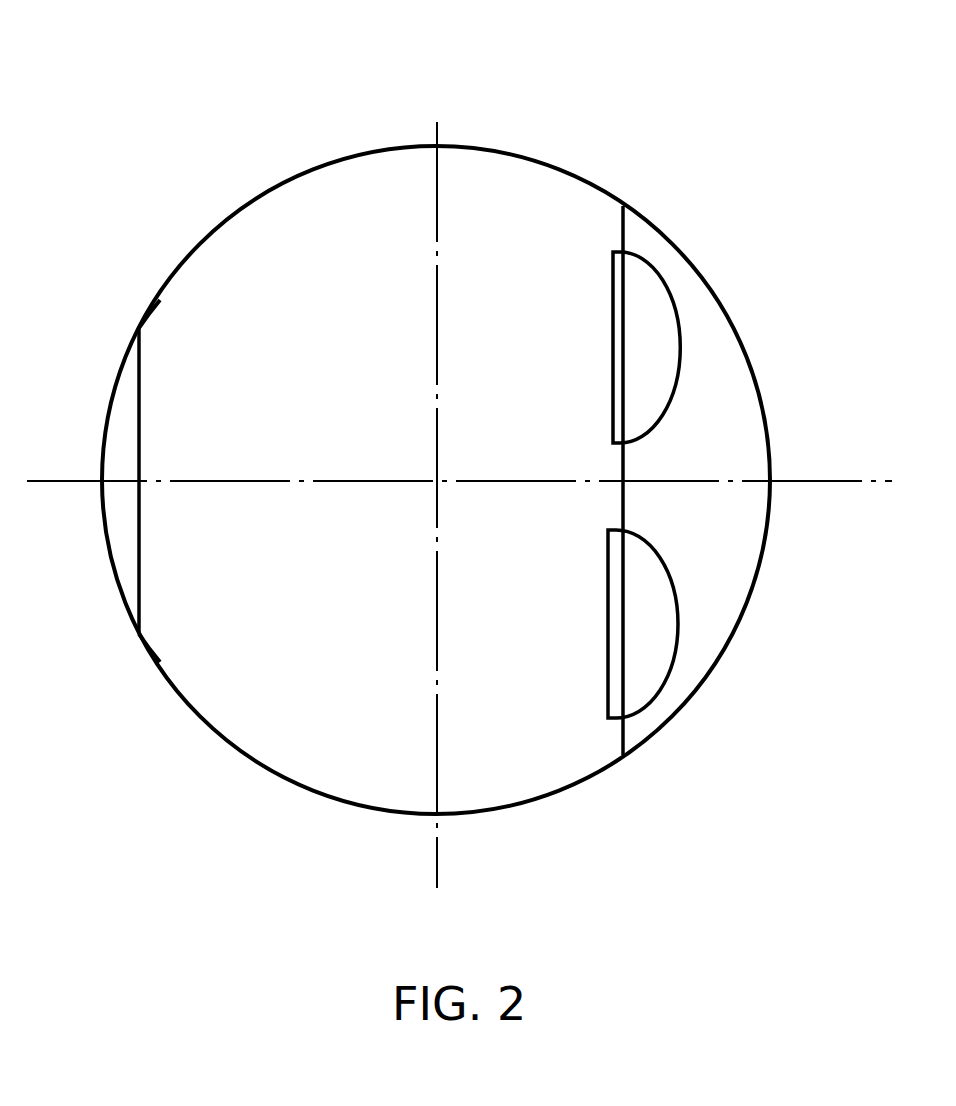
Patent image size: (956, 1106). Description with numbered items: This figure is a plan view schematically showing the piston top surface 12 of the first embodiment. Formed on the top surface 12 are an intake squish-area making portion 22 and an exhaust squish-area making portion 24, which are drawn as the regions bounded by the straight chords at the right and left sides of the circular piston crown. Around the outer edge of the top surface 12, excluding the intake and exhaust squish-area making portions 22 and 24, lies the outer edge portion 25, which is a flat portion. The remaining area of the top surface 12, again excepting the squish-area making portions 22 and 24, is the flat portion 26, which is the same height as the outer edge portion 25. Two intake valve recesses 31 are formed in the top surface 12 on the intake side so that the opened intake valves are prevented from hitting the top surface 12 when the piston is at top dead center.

The piston top surface 12 is at (181, 135).
The intake squish-area making portion 22 is at (737, 393).
The exhaust squish-area making portion 24 is at (117, 445).
The outer edge portion 25 is at (176, 269).
The flat portion 26 is at (315, 203).
The intake valve recesses 31 is at (628, 359).